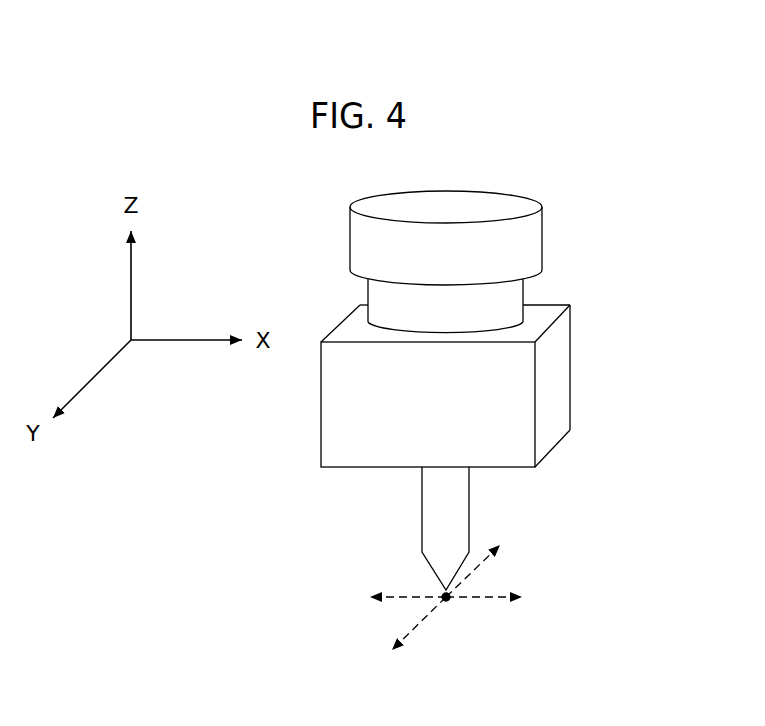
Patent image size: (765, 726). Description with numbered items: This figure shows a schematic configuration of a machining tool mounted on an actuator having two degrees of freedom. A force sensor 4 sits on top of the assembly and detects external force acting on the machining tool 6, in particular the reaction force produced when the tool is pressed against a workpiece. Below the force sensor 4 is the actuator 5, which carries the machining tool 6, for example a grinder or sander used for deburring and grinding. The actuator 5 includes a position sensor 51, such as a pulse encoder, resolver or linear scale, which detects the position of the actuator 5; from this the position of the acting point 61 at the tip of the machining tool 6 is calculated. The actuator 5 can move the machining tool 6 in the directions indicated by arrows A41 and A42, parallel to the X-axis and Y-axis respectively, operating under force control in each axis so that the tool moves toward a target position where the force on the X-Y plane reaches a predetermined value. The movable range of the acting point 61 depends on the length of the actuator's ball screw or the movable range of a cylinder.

The force sensor 4 is at (532, 248).
The position sensor 51 is at (510, 297).
The actuator 5 is at (560, 377).
The machining tool 6 is at (470, 522).
The acting point 61 is at (446, 600).
The arrow A41 is at (405, 597).
The arrow A42 is at (468, 575).